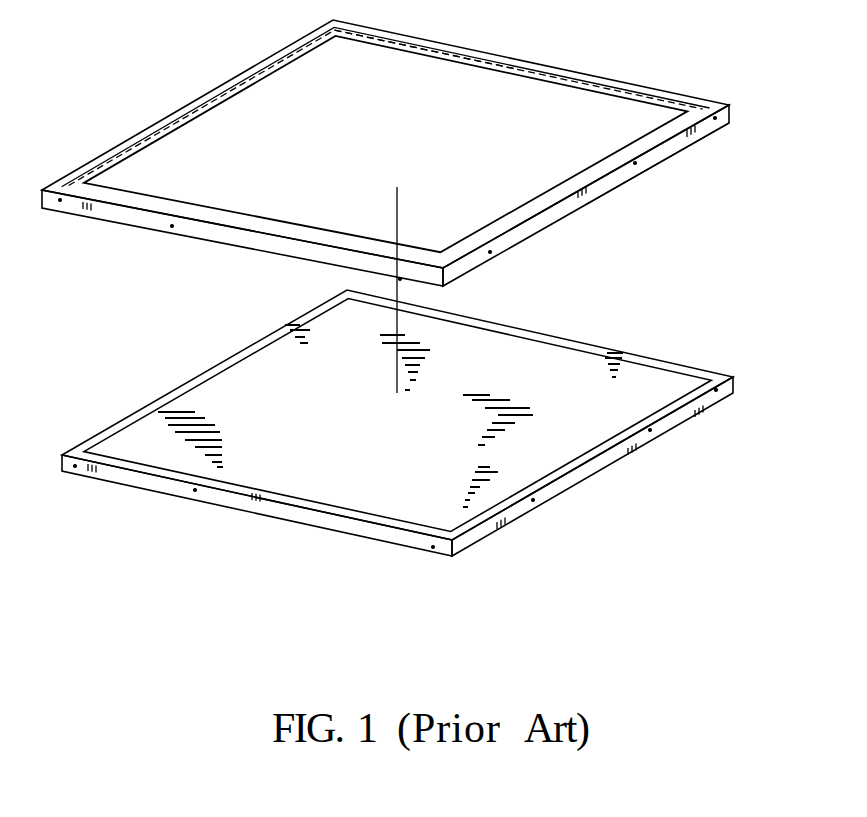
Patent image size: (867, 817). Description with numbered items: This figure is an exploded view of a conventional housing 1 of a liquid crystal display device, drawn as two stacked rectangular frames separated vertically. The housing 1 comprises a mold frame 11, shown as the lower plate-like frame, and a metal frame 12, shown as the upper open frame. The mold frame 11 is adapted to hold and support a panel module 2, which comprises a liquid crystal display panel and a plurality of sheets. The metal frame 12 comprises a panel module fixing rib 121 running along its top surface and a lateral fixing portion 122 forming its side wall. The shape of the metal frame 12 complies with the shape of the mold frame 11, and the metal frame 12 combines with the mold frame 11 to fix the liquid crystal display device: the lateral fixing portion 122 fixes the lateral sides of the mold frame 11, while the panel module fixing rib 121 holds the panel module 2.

The housing 1 is at (722, 272).
The panel module 2 is at (657, 398).
The mold frame 11 is at (613, 457).
The metal frame 12 is at (670, 152).
The panel module fixing rib 121 is at (566, 70).
The lateral fixing portion 122 is at (590, 198).